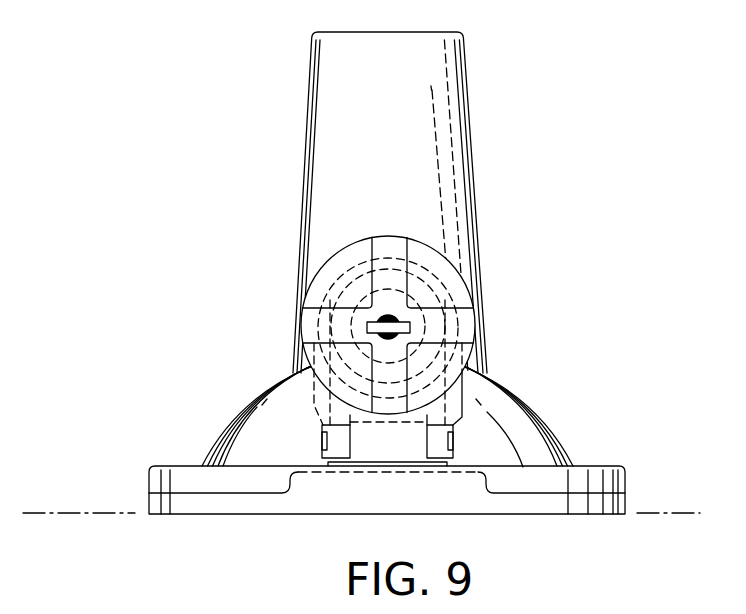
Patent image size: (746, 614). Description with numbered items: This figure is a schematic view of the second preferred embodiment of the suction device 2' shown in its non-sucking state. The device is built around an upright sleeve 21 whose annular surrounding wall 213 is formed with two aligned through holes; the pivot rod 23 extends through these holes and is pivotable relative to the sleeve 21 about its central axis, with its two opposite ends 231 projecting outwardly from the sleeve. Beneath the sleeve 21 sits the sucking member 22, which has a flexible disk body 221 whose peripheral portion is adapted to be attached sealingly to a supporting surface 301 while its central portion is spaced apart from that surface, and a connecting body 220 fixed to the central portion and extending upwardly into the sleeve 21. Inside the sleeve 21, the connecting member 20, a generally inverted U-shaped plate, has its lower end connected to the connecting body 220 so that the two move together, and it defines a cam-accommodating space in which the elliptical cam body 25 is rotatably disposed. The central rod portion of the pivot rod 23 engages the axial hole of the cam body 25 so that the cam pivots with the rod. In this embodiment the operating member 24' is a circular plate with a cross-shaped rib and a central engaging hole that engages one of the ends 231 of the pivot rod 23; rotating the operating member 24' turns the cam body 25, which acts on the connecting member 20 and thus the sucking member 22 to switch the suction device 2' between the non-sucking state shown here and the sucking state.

The suction device 2' is at (361, 273).
The annular surrounding wall 213 is at (315, 58).
The operating member 24' is at (347, 283).
The connecting member 20 is at (385, 262).
The opposite ends 231 is at (390, 325).
The pivot rod 23 is at (284, 304).
The cam body 25 is at (472, 323).
The sucking member 22 is at (151, 328).
The connecting body 220 is at (393, 428).
The flexible disk body 221 is at (213, 503).
The upright sleeve 21 is at (554, 415).
The supporting surface 301 is at (97, 521).